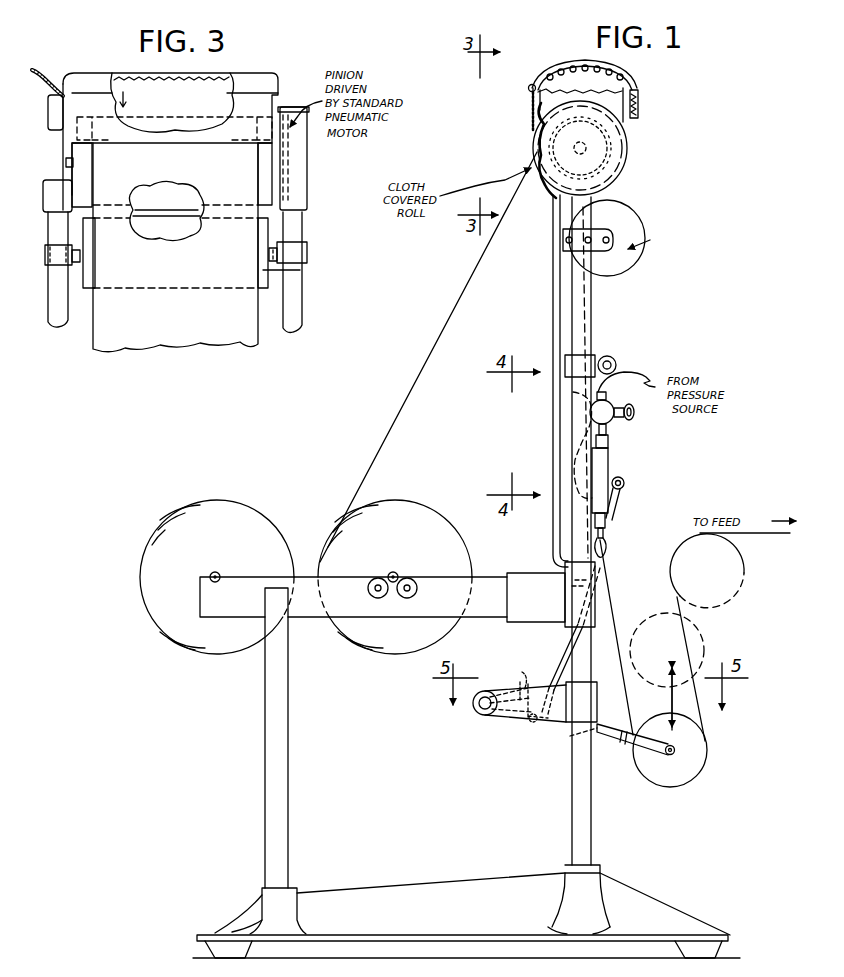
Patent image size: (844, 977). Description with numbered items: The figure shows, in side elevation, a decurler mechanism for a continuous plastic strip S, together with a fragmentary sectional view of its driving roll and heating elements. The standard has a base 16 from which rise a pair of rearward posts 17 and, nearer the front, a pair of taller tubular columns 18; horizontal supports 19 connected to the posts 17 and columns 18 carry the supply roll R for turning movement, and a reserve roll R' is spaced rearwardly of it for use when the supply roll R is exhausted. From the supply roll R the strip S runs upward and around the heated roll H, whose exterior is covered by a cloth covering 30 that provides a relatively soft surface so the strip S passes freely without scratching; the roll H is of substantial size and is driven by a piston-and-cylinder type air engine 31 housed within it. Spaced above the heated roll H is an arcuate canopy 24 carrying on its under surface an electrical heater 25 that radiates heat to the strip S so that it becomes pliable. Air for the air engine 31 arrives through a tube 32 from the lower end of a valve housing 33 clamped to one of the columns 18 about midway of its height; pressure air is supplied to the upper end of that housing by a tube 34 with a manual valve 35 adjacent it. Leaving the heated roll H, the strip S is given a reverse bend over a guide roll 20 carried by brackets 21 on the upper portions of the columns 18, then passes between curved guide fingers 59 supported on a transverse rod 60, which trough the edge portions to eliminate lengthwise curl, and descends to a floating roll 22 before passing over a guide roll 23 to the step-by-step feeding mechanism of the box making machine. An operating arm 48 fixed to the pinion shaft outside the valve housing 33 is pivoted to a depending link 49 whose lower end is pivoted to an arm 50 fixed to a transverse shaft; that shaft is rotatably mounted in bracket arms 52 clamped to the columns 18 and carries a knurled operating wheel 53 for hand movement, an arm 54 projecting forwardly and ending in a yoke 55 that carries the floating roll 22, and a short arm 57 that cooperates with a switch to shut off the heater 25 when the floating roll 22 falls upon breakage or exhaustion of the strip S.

In FIG. 1, the base 16 is at (430, 895).
In FIG. 1, the posts 17 is at (284, 834).
In FIG. 3, the columns 18 is at (52, 299).
In FIG. 1, the columns 18 is at (586, 840).
In FIG. 1, the horizontal supports 19 is at (300, 618).
In FIG. 3, the guide roll 20 is at (300, 270).
In FIG. 1, the guide roll 20 is at (655, 241).
In FIG. 3, the brackets 21 is at (300, 253).
In FIG. 1, the brackets 21 is at (575, 247).
In FIG. 1, the floating roll 22 is at (674, 776).
In FIG. 1, the guide roll 23 is at (722, 578).
In FIG. 1, the canopy 24 is at (612, 80).
In FIG. 1, the heater 25 is at (528, 88).
In FIG. 1, the cloth covering 30 is at (545, 170).
In FIG. 1, the air engine 31 is at (612, 162).
In FIG. 1, the tube 32 is at (552, 320).
In FIG. 1, the valve housing 33 is at (606, 470).
In FIG. 1, the tube 34 is at (632, 378).
In FIG. 1, the manual valve 35 is at (622, 422).
In FIG. 1, the operating arm 48 is at (626, 485).
In FIG. 1, the link 49 is at (560, 658).
In FIG. 1, the arm 50 is at (530, 715).
In FIG. 1, the bracket arms 52 is at (557, 710).
In FIG. 1, the knurled operating wheel 53 is at (478, 714).
In FIG. 1, the arm 54 is at (612, 738).
In FIG. 1, the yoke 55 is at (660, 752).
In FIG. 1, the arm 57 is at (525, 680).
In FIG. 1, the guide fingers 59 is at (572, 395).
In FIG. 1, the transverse rod 60 is at (613, 358).
In FIG. 3, the heated roll H is at (265, 188).
In FIG. 1, the heated roll H is at (626, 140).
In FIG. 1, the supply roll R is at (396, 577).
In FIG. 1, the reserve roll R' is at (226, 577).
In FIG. 3, the strip S is at (250, 340).